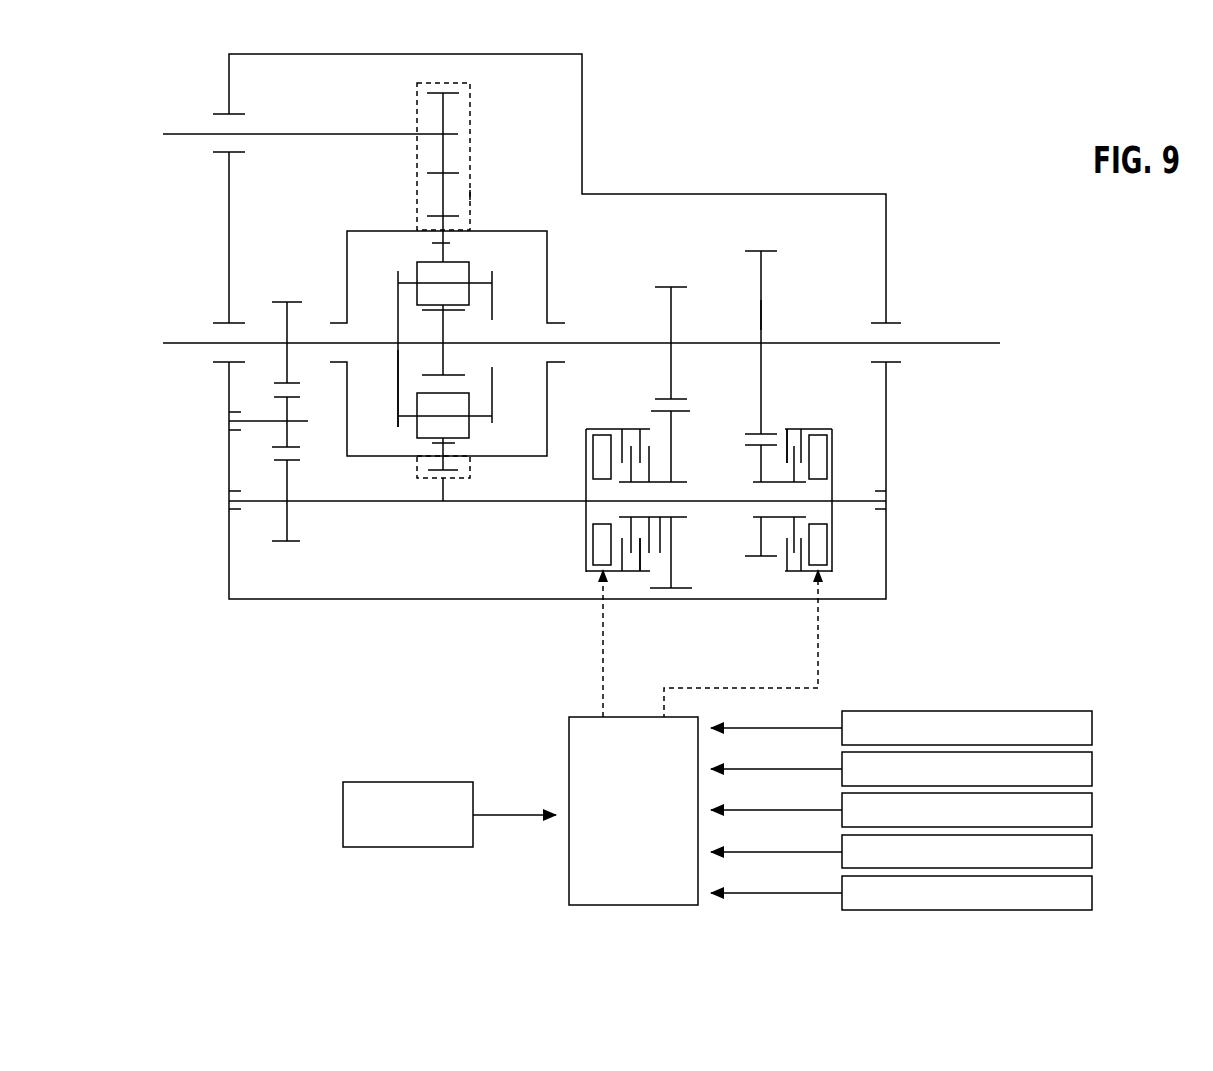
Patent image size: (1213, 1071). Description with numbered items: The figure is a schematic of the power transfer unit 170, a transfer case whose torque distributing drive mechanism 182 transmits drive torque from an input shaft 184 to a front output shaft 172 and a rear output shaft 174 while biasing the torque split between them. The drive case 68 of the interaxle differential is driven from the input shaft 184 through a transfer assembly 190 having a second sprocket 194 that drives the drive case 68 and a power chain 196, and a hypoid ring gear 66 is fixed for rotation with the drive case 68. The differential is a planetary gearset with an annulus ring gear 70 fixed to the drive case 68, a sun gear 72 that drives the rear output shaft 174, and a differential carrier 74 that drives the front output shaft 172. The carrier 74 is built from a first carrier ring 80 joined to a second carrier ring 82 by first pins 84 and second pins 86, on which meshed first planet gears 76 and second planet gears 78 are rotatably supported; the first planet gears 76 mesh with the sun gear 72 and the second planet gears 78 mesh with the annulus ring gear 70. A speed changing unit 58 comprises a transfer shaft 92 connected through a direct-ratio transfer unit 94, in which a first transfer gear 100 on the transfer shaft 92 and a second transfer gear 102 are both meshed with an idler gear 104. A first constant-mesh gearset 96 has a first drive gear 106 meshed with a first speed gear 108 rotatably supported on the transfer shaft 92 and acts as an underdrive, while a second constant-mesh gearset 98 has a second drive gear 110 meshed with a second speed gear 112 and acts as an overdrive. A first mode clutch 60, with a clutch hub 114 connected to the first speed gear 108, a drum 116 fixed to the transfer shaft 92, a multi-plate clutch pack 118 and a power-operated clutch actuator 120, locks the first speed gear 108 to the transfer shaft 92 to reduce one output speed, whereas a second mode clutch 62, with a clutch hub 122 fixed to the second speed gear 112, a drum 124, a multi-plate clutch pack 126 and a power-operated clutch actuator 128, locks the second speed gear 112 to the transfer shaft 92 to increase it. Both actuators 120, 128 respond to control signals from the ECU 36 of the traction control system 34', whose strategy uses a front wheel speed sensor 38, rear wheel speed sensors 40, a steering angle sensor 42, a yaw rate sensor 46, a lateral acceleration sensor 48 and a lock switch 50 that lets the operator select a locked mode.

The power transfer unit 170 is at (948, 60).
The front output shaft 172 is at (192, 343).
The rear output shaft 174 is at (977, 343).
The input shaft 184 is at (273, 133).
The torque distributing drive mechanism 182 is at (457, 96).
The transfer assembly 190 is at (478, 161).
The second sprocket 194 is at (437, 216).
The power chain 196 is at (471, 195).
The second transfer gear 102 is at (290, 300).
The idler gear 104 is at (293, 447).
The first transfer gear 100 is at (293, 543).
The transfer unit 94 is at (258, 517).
The drive case 68 is at (547, 261).
The annulus ring gear 70 is at (447, 243).
The first planet gears 76 is at (428, 270).
The differential carrier 74 is at (395, 300).
The first pins 84 is at (480, 290).
The sun gear 72 is at (447, 352).
The first carrier ring 80 is at (398, 362).
The second carrier ring 82 is at (492, 398).
The second pins 86 is at (478, 417).
The second planet gears 78 is at (460, 428).
The hypoid ring gear 66 is at (403, 473).
The transfer shaft 92 is at (473, 502).
The first drive gear 106 is at (656, 299).
The first constant-mesh gearset 96 is at (703, 407).
The first speed gear 108 is at (680, 590).
The speed changing unit 58 is at (710, 282).
The second drive gear 110 is at (762, 278).
The second constant-mesh gearset 98 is at (770, 420).
The second speed gear 112 is at (767, 558).
The clutch hub 122 is at (778, 519).
The first mode clutch 60 is at (575, 555).
The drum 116 is at (590, 430).
The power-operated clutch actuator 120 is at (593, 468).
The clutch hub 114 is at (657, 522).
The multi-plate clutch pack 118 is at (630, 565).
The second mode clutch 62 is at (845, 550).
The drum 124 is at (823, 430).
The power-operated clutch actuator 128 is at (820, 531).
The multi-plate clutch pack 126 is at (797, 430).
The electronic control unit 36 is at (582, 747).
The lock switch 50 is at (353, 800).
The traction control system 34' is at (483, 889).
The front wheel speed sensor 38 is at (1092, 718).
The rear wheel speed sensors 40 is at (1092, 768).
The steering angle sensor 42 is at (1092, 810).
The yaw rate sensor 46 is at (1092, 852).
The lateral acceleration sensor 48 is at (1092, 893).